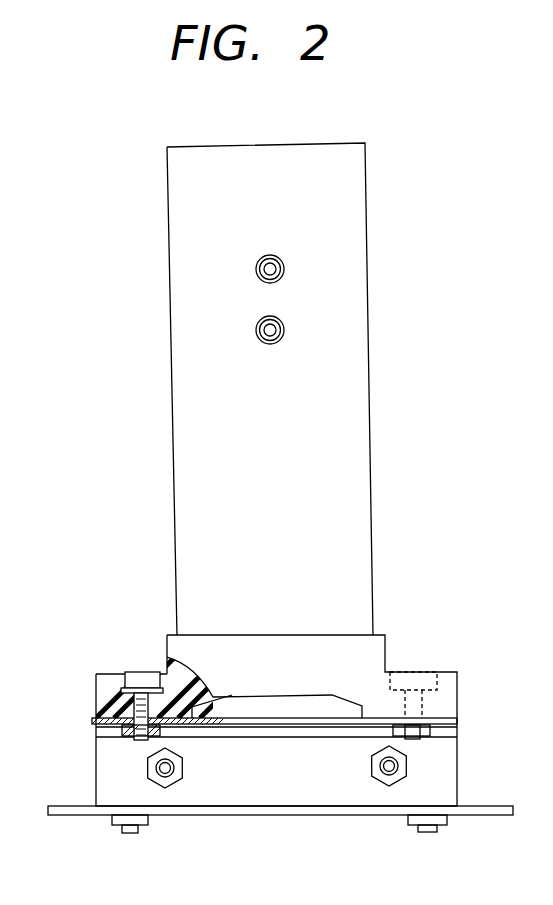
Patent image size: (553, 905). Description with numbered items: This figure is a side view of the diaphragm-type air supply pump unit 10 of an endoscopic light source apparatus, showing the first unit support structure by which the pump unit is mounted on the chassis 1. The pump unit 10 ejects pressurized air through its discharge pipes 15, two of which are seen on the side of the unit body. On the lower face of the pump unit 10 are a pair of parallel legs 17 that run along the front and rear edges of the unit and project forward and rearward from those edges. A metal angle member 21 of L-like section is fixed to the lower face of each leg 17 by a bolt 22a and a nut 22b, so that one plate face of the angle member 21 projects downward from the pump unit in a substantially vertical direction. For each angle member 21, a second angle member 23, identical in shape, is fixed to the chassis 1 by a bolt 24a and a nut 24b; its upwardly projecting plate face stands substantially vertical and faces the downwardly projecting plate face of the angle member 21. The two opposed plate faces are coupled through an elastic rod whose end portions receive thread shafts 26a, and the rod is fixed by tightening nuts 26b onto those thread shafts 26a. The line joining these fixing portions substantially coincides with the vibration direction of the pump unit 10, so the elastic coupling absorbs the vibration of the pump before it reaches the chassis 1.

The chassis 1 is at (488, 814).
The air supply pump unit 10 is at (400, 153).
The discharge pipes 15 is at (285, 264).
The legs 17 is at (100, 674).
The angle member 21 is at (96, 718).
The bolt 22a is at (142, 672).
The nut 22b is at (122, 731).
The angle member 23 is at (100, 776).
The bolt 24a is at (130, 833).
The nut 24b is at (112, 822).
The thread shafts 26a is at (183, 760).
The nuts 26b is at (180, 782).